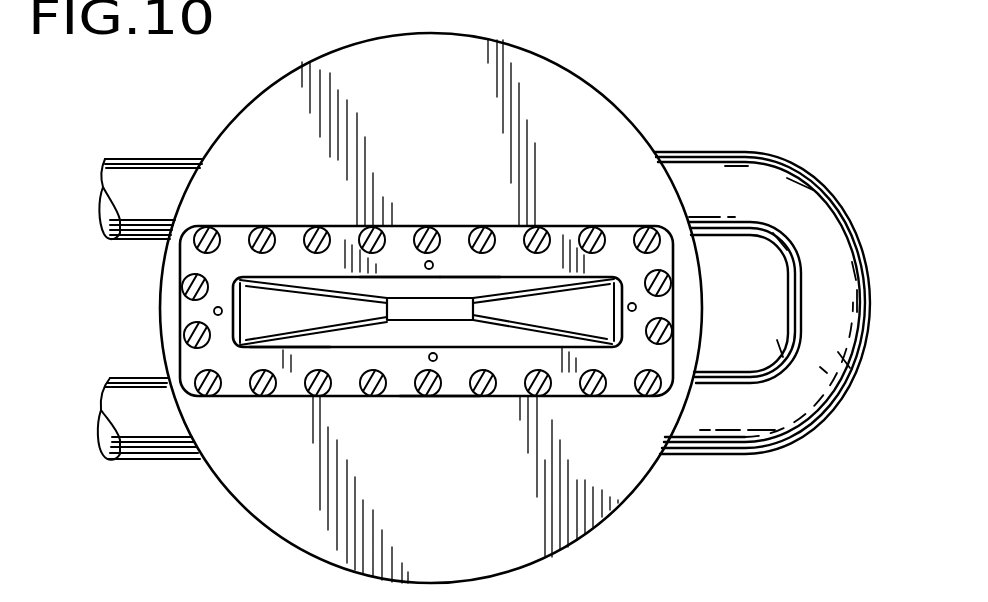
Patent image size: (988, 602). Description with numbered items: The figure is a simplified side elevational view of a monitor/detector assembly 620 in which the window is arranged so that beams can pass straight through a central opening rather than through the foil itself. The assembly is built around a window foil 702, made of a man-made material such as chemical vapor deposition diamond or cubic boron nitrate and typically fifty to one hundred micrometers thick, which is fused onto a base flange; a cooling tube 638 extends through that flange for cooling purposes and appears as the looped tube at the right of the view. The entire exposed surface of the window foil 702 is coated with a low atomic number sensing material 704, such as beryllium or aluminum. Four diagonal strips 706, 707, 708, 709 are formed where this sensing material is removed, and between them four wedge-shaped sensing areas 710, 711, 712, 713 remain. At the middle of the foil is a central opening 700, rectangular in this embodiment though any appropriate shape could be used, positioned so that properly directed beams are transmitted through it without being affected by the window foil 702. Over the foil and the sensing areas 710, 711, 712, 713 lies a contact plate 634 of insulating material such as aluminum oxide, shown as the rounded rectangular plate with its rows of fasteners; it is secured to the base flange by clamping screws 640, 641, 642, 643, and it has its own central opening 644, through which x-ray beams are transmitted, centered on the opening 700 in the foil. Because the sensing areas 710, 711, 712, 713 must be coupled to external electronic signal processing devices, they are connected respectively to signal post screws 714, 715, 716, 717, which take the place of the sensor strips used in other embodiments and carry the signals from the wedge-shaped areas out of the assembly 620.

The monitor/detector assembly 620 is at (757, 517).
The contact plate 634 is at (227, 243).
The cooling tube 638 is at (822, 194).
The clamping screw 640 is at (432, 262).
The clamping screw 641 is at (186, 281).
The clamping screw 642 is at (195, 333).
The clamping screw 643 is at (437, 397).
The central opening 644 is at (475, 336).
The central opening 700 is at (465, 298).
The window foil 702 is at (622, 277).
The sensing material 704 is at (333, 278).
The diagonal strip 706 is at (287, 277).
The diagonal strip 707 is at (543, 278).
The diagonal strip 708 is at (284, 348).
The diagonal strip 709 is at (542, 327).
The sensing area 710 is at (400, 277).
The sensing area 711 is at (262, 327).
The sensing area 712 is at (392, 335).
The sensing area 713 is at (623, 372).
The signal post screw 714 is at (453, 277).
The signal post screw 715 is at (213, 311).
The signal post screw 716 is at (437, 360).
The signal post screw 717 is at (637, 306).